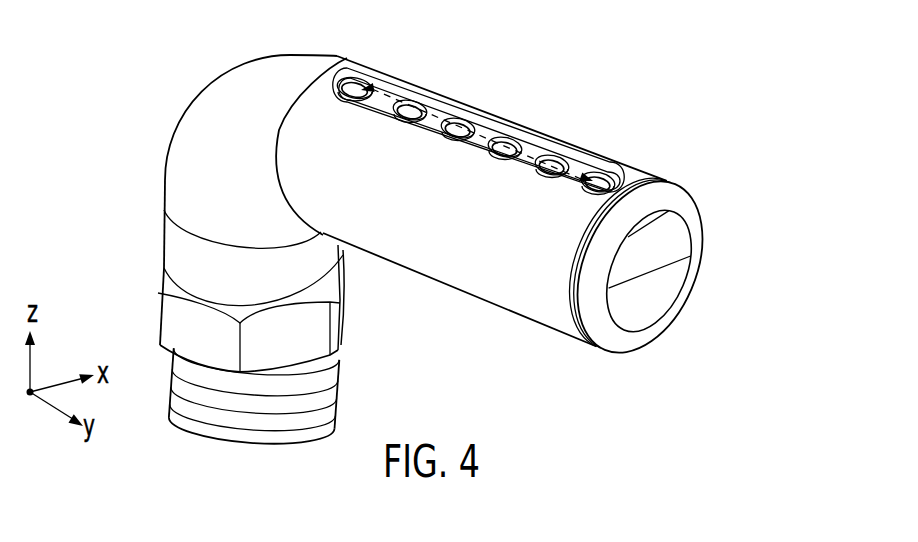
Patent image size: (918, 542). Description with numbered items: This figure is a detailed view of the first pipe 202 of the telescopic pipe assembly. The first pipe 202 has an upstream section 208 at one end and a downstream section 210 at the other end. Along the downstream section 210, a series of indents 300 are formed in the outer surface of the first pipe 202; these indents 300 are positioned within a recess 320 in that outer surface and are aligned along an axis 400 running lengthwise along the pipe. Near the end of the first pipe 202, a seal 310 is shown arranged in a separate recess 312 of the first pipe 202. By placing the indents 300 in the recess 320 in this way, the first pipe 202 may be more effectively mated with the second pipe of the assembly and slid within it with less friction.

The first pipe 202 is at (750, 113).
The upstream section 208 is at (138, 242).
The downstream section 210 is at (528, 82).
The indents 300 is at (560, 160).
The seal 310 is at (699, 214).
The recess 312 is at (679, 163).
The recess 320 is at (451, 93).
The axis 400 is at (380, 92).